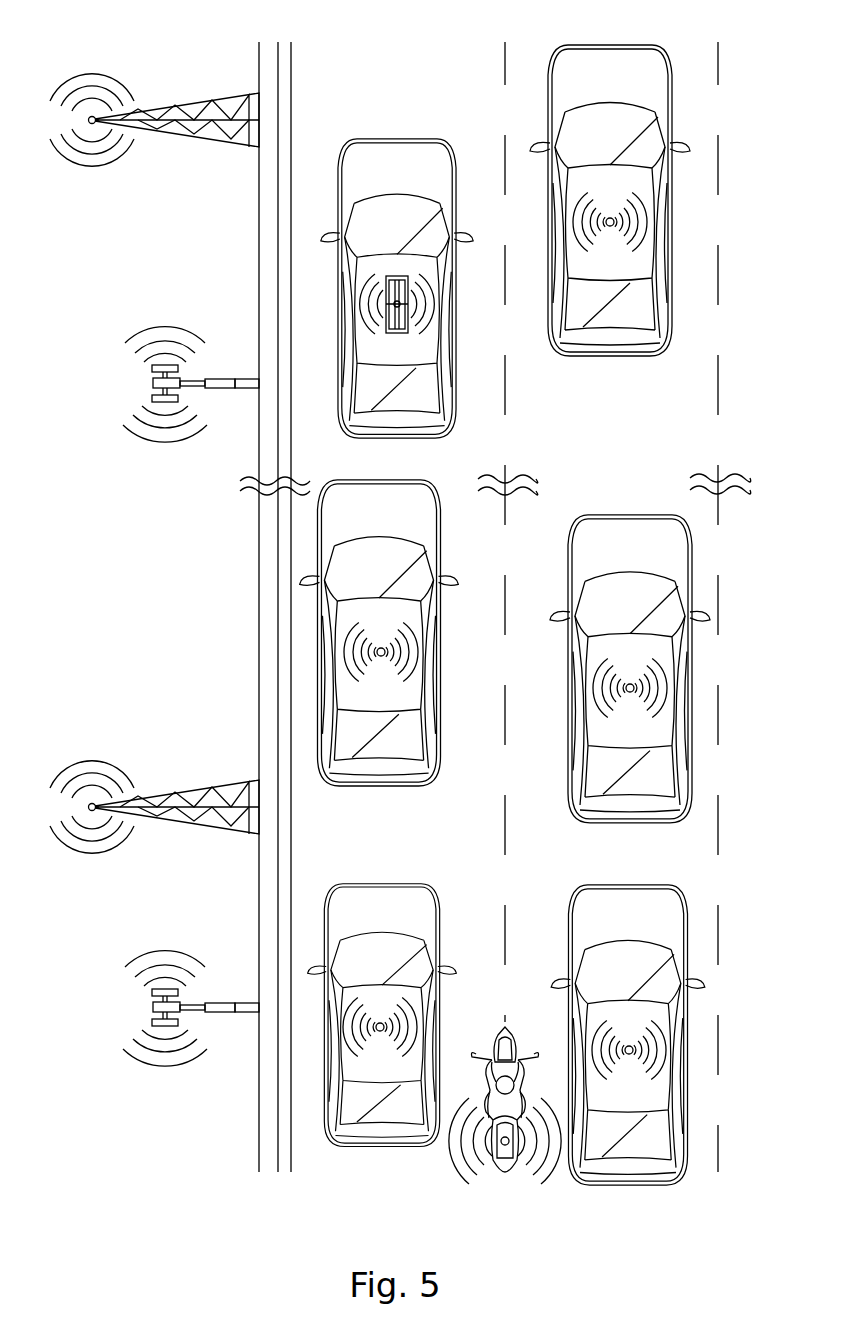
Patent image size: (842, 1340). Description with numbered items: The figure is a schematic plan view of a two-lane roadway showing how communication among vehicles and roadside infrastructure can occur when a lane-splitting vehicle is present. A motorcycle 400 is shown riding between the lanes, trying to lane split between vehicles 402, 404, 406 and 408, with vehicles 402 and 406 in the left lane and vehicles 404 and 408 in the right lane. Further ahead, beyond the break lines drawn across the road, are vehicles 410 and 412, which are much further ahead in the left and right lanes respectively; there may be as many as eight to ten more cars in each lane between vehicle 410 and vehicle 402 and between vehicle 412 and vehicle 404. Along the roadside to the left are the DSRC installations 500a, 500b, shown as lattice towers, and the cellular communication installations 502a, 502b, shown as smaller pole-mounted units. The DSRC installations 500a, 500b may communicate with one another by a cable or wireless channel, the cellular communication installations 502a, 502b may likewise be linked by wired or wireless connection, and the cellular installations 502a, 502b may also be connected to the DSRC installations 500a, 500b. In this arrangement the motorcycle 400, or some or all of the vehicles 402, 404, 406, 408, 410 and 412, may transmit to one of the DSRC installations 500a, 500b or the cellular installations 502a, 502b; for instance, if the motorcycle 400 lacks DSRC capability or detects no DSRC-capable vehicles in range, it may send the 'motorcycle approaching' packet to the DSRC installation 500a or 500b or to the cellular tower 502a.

The motorcycle 400 is at (505, 1104).
The vehicle 402 is at (359, 927).
The vehicle 404 is at (609, 937).
The vehicle 406 is at (362, 524).
The vehicle 408 is at (607, 557).
The vehicle 410 is at (373, 197).
The vehicle 412 is at (590, 90).
The DSRC installation 500a is at (170, 815).
The DSRC installation 500b is at (164, 128).
The cellular communication installation 502a is at (172, 1022).
The cellular communication installation 502b is at (172, 396).